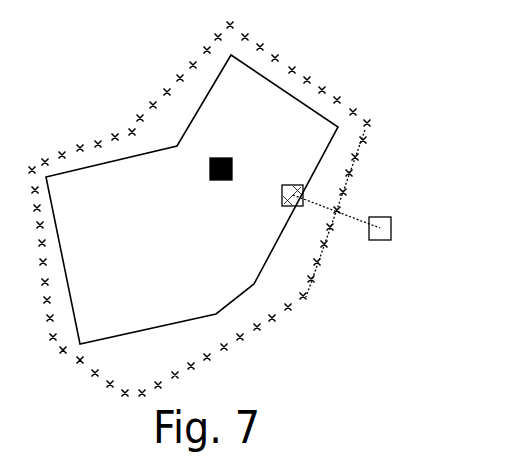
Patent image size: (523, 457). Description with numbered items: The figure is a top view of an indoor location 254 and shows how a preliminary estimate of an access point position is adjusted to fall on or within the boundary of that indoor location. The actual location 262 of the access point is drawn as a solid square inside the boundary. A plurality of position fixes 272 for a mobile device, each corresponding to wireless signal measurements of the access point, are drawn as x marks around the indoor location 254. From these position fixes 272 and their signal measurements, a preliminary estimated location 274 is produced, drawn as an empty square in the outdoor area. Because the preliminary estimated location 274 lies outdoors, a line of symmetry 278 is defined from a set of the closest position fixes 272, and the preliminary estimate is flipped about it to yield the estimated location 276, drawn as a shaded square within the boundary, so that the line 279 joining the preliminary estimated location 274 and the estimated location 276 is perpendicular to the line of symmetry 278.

The indoor location 254 is at (287, 63).
The actual location 262 is at (233, 157).
The position fixes 272 is at (367, 143).
The preliminary estimated location 274 is at (391, 233).
The estimated location 276 is at (282, 206).
The line of symmetry 278 is at (314, 272).
The line 279 is at (357, 217).